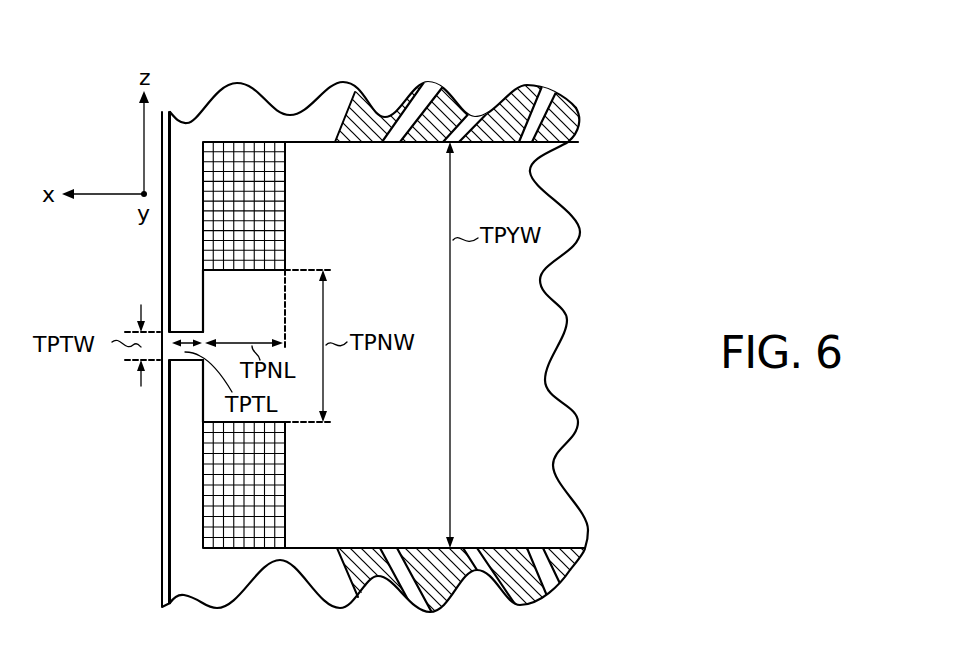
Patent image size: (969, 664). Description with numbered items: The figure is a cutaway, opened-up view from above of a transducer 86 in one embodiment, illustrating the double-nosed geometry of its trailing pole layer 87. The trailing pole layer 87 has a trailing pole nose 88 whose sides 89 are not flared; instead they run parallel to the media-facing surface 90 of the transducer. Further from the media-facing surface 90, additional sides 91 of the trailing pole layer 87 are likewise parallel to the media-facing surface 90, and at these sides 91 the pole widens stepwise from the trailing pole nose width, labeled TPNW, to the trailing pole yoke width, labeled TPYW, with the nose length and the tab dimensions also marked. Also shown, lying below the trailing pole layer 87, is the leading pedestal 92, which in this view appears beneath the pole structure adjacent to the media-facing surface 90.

The transducer 86 is at (626, 103).
The trailing pole layer 87 is at (553, 308).
The trailing pole nose 88 is at (233, 289).
The sides 89 is at (192, 300).
The media-facing surface 90 is at (152, 500).
The sides 91 is at (280, 163).
The leading pedestal 92 is at (437, 112).